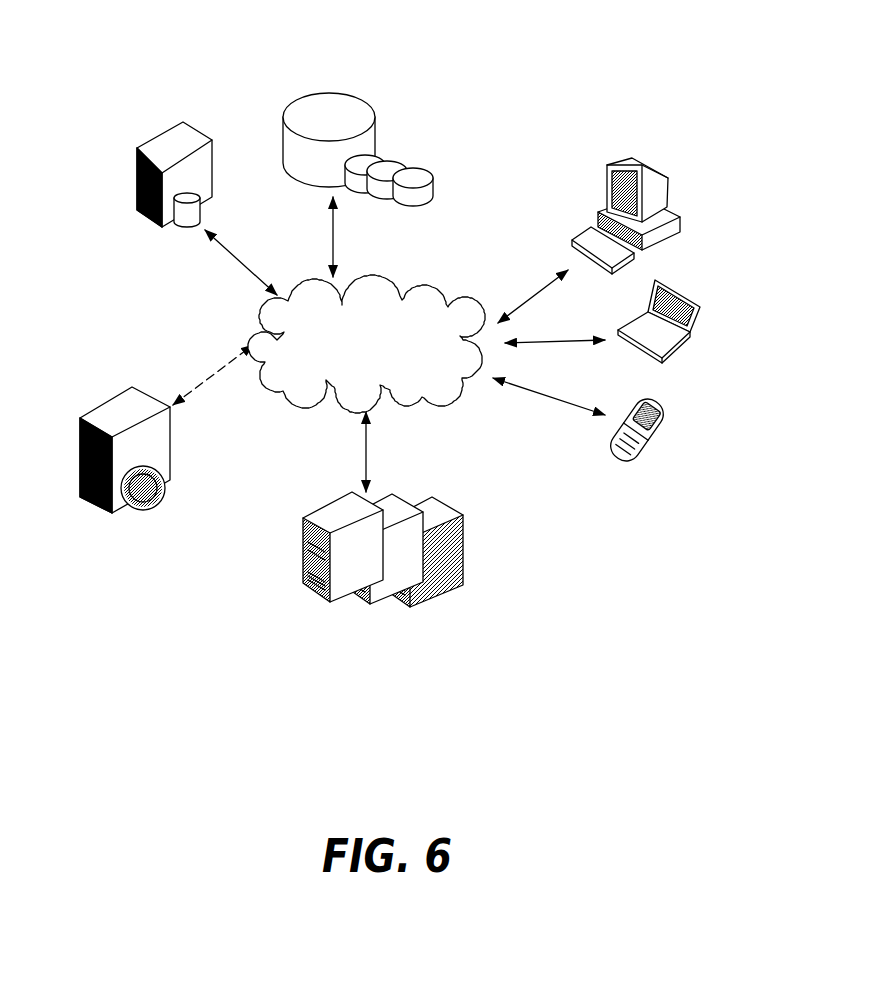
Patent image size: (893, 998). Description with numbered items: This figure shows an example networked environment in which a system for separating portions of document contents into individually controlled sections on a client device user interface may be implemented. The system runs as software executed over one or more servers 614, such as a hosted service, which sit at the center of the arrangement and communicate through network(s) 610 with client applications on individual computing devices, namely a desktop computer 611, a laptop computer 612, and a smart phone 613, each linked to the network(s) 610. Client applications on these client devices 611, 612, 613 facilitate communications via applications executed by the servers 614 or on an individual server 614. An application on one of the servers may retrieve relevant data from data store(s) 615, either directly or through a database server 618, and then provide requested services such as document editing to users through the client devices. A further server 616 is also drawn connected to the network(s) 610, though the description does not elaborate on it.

The network(s) 610 is at (373, 268).
The desktop computer 611 is at (665, 152).
The laptop computer 612 is at (698, 280).
The smart phone 613 is at (670, 397).
The servers 614 is at (330, 497).
The data store(s) 615 is at (343, 72).
The server 616 is at (102, 398).
The database server 618 is at (175, 237).